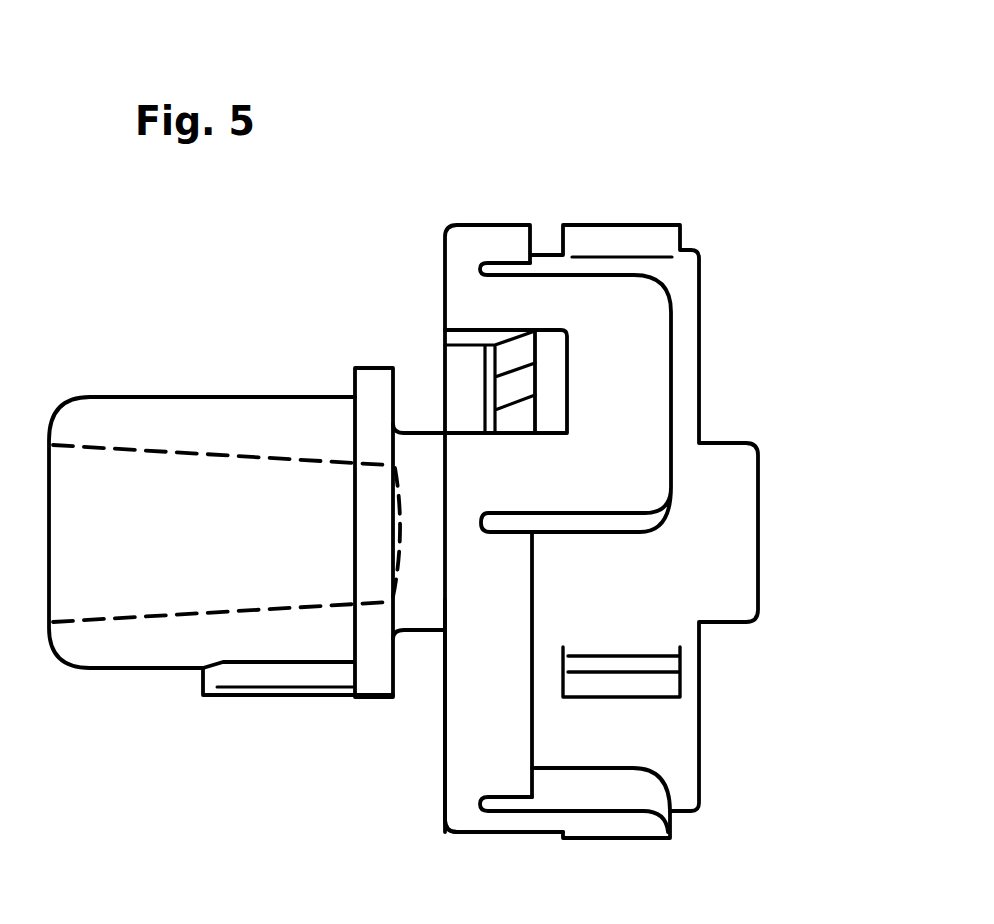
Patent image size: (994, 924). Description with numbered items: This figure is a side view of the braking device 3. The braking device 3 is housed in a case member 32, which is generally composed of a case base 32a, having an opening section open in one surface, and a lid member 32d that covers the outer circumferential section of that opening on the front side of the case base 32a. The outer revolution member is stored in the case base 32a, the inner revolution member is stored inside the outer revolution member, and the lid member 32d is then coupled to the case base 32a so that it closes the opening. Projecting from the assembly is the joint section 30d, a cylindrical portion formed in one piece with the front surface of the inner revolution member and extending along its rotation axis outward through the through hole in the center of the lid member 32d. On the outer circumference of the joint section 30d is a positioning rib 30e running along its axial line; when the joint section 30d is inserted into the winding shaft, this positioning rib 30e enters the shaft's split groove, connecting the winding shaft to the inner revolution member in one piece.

The braking device 3 is at (594, 142).
The joint section 30d is at (195, 422).
The positioning rib 30e is at (253, 678).
The case member 32 is at (688, 283).
The case base 32a is at (575, 547).
The lid member 32d is at (453, 747).